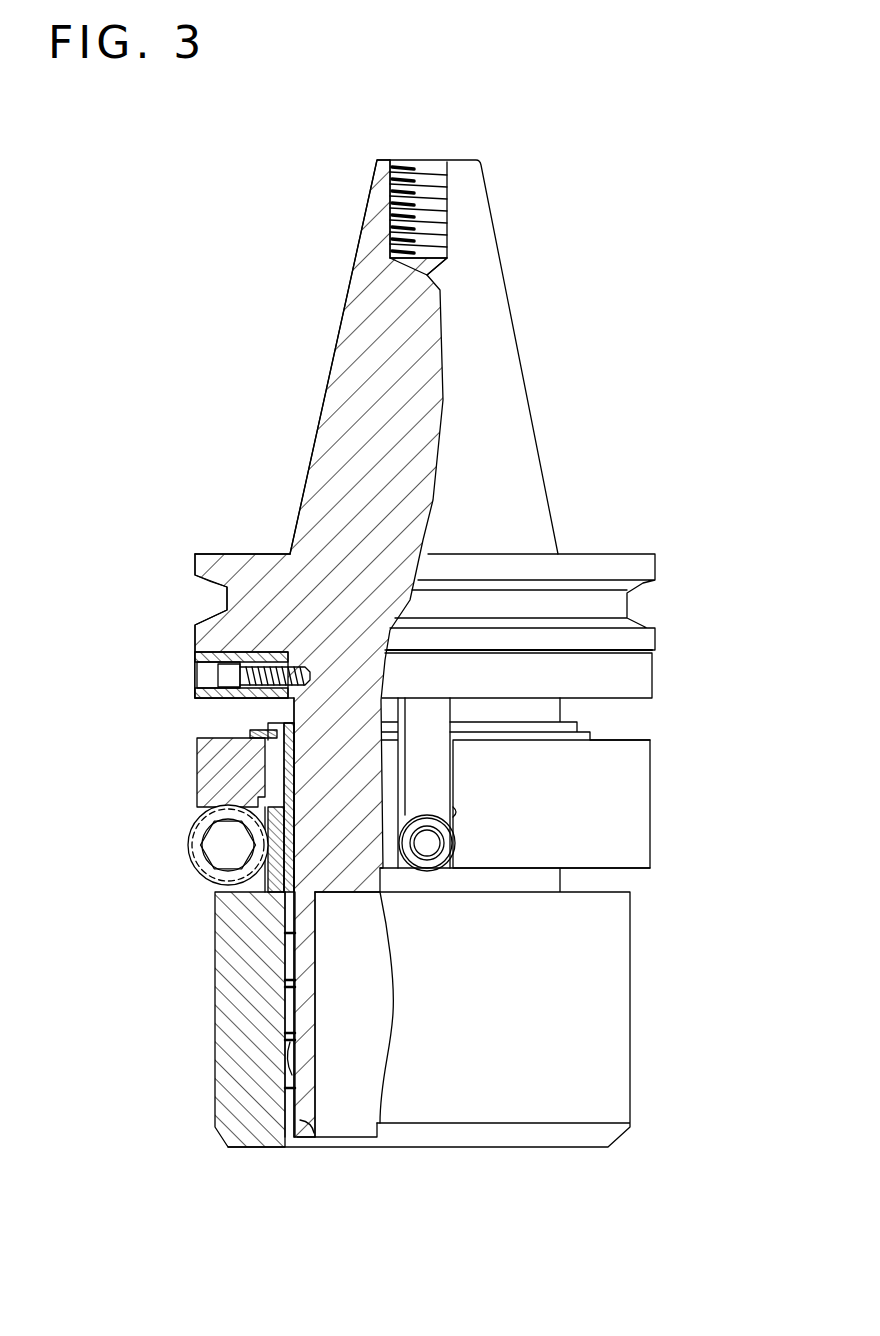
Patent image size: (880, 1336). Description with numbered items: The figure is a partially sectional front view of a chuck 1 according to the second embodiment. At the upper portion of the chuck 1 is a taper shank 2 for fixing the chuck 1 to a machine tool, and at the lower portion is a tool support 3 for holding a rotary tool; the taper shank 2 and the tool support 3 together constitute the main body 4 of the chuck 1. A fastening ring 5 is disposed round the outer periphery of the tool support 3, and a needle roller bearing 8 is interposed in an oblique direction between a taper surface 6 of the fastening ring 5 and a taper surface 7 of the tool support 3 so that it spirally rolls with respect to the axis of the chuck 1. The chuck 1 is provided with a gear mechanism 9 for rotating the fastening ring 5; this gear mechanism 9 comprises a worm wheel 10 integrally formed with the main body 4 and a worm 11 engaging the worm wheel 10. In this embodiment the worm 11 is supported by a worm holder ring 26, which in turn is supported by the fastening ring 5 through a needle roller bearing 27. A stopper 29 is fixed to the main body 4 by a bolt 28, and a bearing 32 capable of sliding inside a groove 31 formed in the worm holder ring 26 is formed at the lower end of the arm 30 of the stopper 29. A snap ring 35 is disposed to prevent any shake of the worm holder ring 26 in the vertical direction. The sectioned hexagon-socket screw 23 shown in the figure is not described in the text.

The chuck 1 is at (167, 597).
The taper shank 2 is at (317, 430).
The tool support 3 is at (303, 1103).
The main body 4 is at (560, 707).
The fastening ring 5 is at (218, 995).
The taper surface 6 is at (308, 1132).
The taper surface 7 is at (297, 1067).
The needle roller bearing 8 is at (283, 1022).
The gear mechanism 9 is at (167, 780).
The worm wheel 10 is at (263, 892).
The worm 11 is at (190, 860).
The hex socket screw 23 is at (210, 838).
The worm holder ring 26 is at (620, 768).
The needle roller bearing 27 is at (265, 777).
The bolt 28 is at (197, 667).
The stopper 29 is at (640, 665).
The arm 30 is at (438, 768).
The groove 31 is at (460, 817).
The bearing 32 is at (447, 878).
The snap ring 35 is at (267, 728).